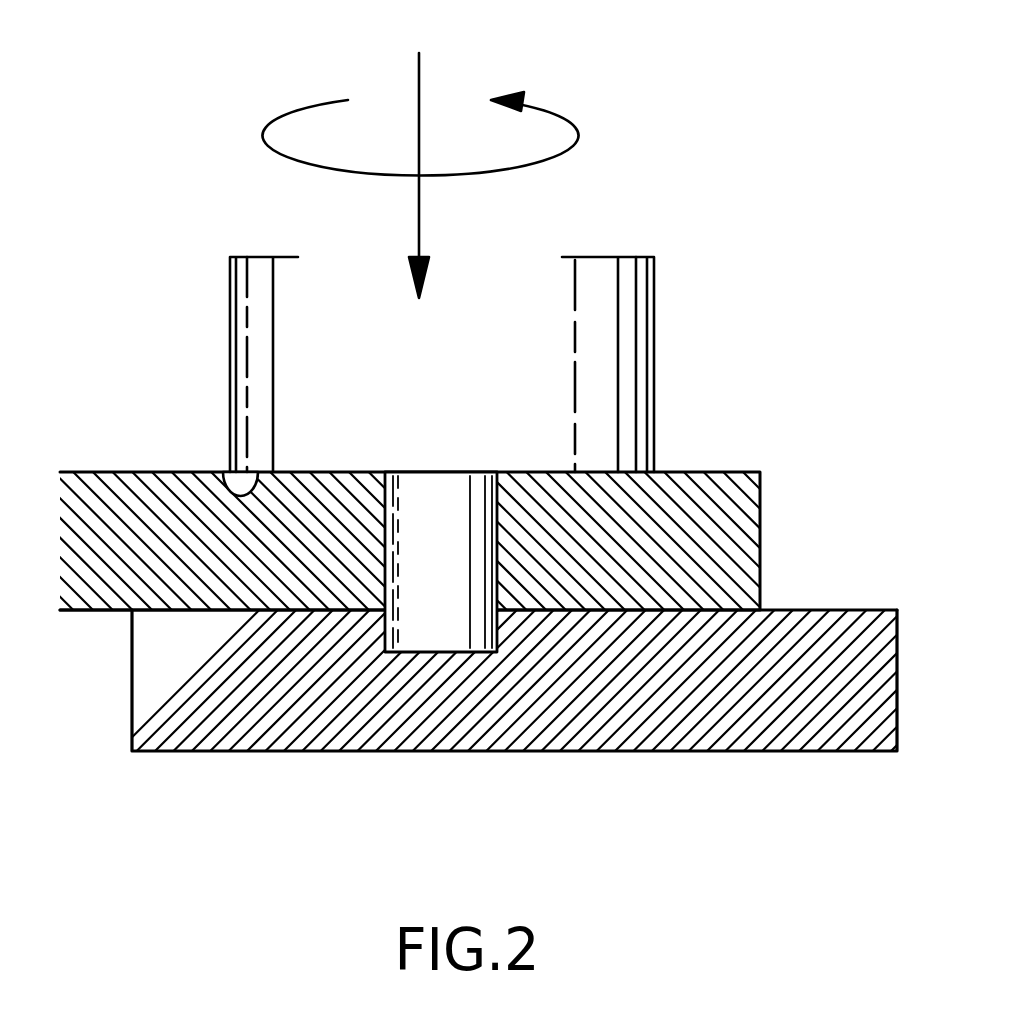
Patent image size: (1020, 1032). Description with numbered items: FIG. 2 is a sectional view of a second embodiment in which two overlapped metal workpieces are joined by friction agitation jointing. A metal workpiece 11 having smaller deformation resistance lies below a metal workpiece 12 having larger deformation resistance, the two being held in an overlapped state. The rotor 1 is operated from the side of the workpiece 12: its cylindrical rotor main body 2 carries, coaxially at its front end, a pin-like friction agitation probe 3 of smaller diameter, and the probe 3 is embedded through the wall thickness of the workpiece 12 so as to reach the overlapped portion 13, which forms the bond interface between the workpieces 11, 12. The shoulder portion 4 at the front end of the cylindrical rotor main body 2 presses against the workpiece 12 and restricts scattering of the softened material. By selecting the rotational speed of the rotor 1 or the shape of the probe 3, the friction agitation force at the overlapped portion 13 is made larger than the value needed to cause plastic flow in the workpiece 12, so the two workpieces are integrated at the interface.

The rotor 1 is at (655, 322).
The cylindrical rotor main body 2 is at (628, 383).
The friction agitation probe 3 is at (425, 640).
The shoulder portion 4 is at (222, 476).
The metal workpiece having smaller deformation resistance 11 is at (215, 730).
The metal workpiece having larger deformation resistance 12 is at (730, 487).
The overlapped portion 13 is at (622, 606).